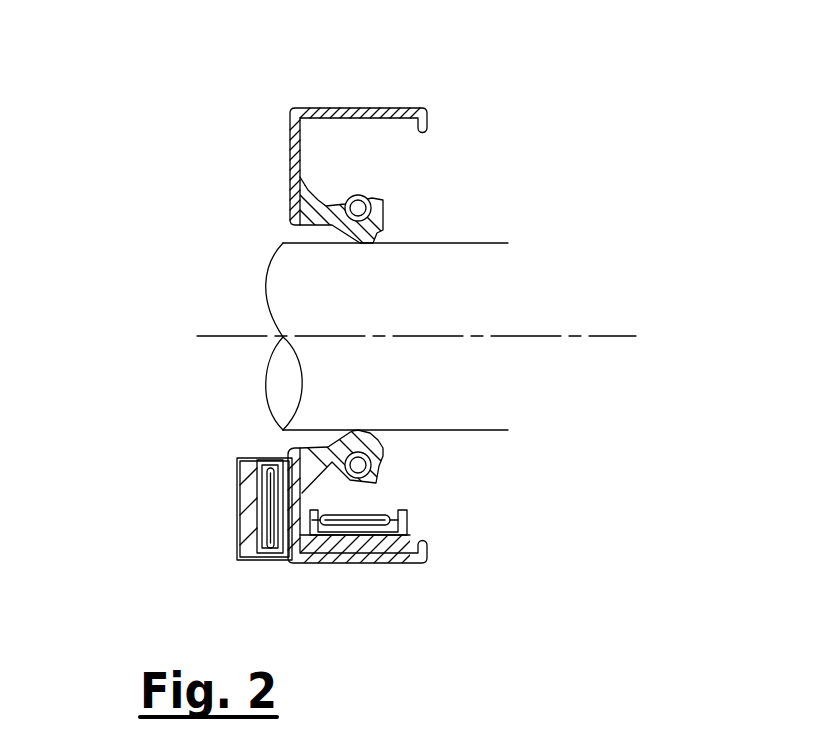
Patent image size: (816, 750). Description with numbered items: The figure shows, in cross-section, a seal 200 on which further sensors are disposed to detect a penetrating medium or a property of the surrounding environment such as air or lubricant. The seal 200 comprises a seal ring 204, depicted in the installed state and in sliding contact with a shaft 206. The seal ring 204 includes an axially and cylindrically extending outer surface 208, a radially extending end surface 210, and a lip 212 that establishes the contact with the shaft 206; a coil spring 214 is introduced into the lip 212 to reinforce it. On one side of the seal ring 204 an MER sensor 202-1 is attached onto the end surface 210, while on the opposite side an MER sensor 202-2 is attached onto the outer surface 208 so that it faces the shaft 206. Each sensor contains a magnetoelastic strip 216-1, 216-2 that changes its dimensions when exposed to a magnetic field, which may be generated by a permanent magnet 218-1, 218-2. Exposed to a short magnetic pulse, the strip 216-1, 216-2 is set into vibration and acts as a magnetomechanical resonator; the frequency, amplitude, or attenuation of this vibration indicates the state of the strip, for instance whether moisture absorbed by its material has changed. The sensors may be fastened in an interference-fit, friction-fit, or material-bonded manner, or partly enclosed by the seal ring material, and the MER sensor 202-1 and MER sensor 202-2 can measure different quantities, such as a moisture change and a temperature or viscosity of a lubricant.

The seal 200 is at (683, 172).
The MER sensor 202-1 is at (180, 411).
The MER sensor 202-2 is at (356, 525).
The seal ring 204 is at (340, 135).
The shaft 206 is at (483, 243).
The outer surface 208 is at (340, 161).
The end surface 210 is at (290, 147).
The lip 212 is at (385, 212).
The coil spring 214 is at (320, 205).
The magnetoelastic strip 216-1 is at (248, 497).
The magnetoelastic strip 216-2 is at (478, 495).
The permanent magnet 218-1 is at (242, 457).
The permanent magnet 218-2 is at (370, 548).